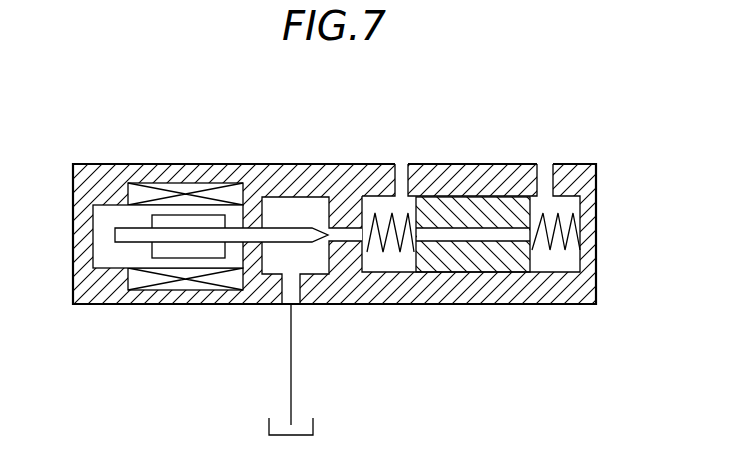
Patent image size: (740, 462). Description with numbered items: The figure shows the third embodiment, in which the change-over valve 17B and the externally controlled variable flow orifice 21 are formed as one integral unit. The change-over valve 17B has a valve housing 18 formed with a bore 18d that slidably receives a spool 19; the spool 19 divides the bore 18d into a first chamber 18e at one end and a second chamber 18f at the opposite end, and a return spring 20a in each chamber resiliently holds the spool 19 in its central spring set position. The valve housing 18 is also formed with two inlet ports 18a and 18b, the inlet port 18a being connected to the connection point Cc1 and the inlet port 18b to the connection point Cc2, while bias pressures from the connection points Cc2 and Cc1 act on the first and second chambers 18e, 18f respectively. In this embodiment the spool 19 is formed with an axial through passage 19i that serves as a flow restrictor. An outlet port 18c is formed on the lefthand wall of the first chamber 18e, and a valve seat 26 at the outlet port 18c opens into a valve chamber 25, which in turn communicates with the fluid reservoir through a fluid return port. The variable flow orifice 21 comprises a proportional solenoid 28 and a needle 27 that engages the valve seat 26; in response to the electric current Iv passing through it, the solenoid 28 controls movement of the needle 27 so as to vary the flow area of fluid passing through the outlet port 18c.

The valve housing 18 is at (582, 163).
The inlet port 18a is at (395, 180).
The inlet port 18b is at (538, 176).
The outlet port 18c is at (347, 240).
The bore 18d is at (554, 269).
The first chamber 18e is at (373, 263).
The second chamber 18f is at (563, 207).
The spool 19 is at (467, 203).
The axial through passage 19i is at (498, 236).
The return spring 20a is at (386, 251).
The externally controlled variable flow orifice 21 is at (198, 312).
The valve chamber 25 is at (270, 200).
The valve seat 26 is at (306, 198).
The needle 27 is at (277, 239).
The solenoid 28 is at (175, 188).
The electric current Iv is at (143, 308).
The change-over valve 17B is at (466, 314).
The connection point Cc2 is at (400, 164).
The connection point Cc1 is at (545, 164).